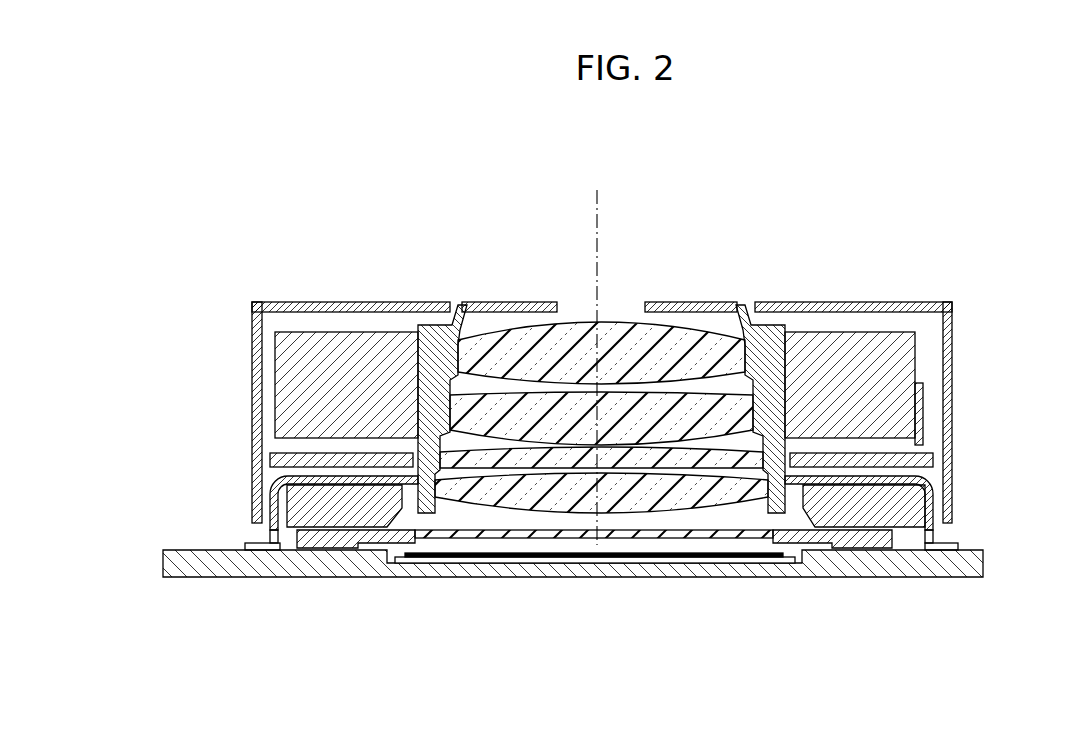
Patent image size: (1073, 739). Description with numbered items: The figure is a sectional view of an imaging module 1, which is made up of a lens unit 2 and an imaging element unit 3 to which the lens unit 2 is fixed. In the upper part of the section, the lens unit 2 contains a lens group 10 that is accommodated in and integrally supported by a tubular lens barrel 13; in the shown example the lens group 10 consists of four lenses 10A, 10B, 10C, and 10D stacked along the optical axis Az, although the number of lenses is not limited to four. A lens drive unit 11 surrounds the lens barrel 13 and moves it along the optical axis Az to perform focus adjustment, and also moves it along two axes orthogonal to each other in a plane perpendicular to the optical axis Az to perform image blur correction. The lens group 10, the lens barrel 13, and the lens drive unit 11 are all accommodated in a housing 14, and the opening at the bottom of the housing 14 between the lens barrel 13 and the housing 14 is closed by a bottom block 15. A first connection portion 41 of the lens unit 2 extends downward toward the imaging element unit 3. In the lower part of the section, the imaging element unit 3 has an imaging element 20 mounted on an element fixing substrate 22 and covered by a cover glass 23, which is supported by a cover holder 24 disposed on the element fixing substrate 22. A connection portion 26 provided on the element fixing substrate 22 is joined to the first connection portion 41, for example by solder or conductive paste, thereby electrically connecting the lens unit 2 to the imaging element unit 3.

The imaging module 1 is at (952, 236).
The lens unit 2 is at (965, 312).
The imaging element unit 3 is at (944, 587).
The lens group 10 is at (612, 235).
The lens 10A is at (615, 343).
The lens 10B is at (637, 407).
The lens 10C is at (672, 453).
The lens 10D is at (710, 488).
The lens drive unit 11 is at (922, 350).
The lens barrel 13 is at (775, 337).
The housing 14 is at (251, 340).
The bottom block 15 is at (908, 514).
The imaging element 20 is at (603, 563).
The element fixing substrate 22 is at (330, 573).
The cover glass 23 is at (680, 540).
The cover holder 24 is at (848, 544).
The connection portion 26 is at (250, 544).
The first connection portion 41 is at (270, 488).
The optical axis Az is at (594, 229).